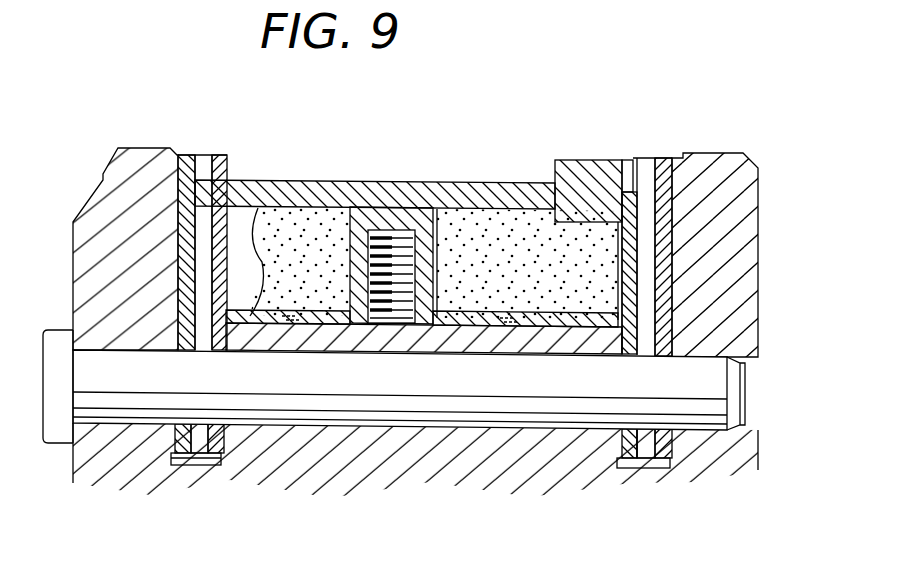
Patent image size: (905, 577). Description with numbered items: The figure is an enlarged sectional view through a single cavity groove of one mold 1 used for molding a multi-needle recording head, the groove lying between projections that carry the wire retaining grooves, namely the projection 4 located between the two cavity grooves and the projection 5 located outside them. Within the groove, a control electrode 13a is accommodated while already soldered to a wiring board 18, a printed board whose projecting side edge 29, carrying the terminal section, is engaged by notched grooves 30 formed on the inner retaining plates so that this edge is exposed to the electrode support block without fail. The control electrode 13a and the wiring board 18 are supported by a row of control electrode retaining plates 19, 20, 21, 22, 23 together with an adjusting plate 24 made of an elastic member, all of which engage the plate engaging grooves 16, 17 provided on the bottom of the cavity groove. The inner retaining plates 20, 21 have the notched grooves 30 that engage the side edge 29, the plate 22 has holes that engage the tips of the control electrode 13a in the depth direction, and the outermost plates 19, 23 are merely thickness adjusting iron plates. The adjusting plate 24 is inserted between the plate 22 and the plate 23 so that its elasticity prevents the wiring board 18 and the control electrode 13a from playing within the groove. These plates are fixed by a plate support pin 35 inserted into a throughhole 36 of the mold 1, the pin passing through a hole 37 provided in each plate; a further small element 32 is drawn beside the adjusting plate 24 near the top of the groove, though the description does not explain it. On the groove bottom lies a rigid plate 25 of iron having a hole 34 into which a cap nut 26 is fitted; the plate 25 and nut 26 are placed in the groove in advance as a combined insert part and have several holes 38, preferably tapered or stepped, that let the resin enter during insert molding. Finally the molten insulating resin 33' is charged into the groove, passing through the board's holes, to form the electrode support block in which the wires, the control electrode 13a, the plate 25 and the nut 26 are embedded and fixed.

The mold 1 is at (84, 116).
The projection 4 is at (740, 269).
The projection 5 is at (80, 283).
The control electrode 13a is at (593, 205).
The plate engaging groove 16 is at (630, 470).
The plate engaging groove 17 is at (210, 466).
The wiring board 18 is at (523, 197).
The control electrode retaining plate 19 is at (183, 466).
The control electrode retaining plate 20 is at (198, 466).
The control electrode retaining plate 21 is at (207, 466).
The control electrode retaining plate 22 is at (623, 470).
The control electrode retaining plate 23 is at (660, 470).
The adjusting plate 24 is at (652, 165).
The rigid plate 25 is at (262, 262).
The nut 26 is at (417, 212).
The side edge portion of wiring board 29 is at (196, 196).
The notched groove 30 is at (221, 151).
The washer 32 is at (626, 196).
The resin 33' is at (527, 210).
The hole 34 is at (420, 327).
The plate support pin 35 is at (390, 410).
The throughhole 36 is at (745, 373).
The hole 37 is at (222, 419).
The hole 38 is at (290, 326).